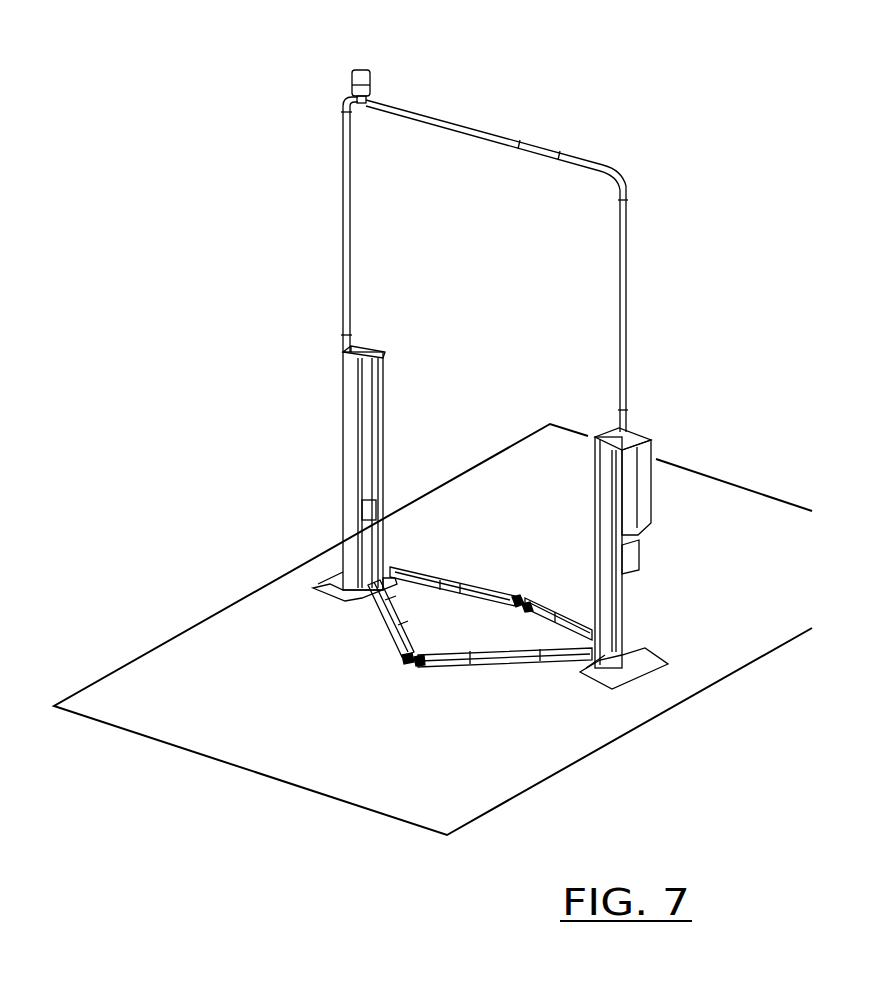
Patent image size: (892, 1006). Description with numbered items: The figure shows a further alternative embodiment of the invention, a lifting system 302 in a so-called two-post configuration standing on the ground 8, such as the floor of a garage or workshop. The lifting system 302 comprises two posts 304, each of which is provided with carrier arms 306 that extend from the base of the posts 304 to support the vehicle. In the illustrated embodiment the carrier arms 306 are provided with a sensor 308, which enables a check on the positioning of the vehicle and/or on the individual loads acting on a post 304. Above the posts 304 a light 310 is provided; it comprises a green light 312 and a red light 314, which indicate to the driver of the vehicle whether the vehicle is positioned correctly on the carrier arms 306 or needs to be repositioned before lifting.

The ground 8 is at (475, 808).
The lifting system 302 is at (225, 373).
The post 304 is at (325, 484).
The carrier arm 306 is at (476, 590).
The sensor 308 is at (526, 606).
The light 310 is at (394, 228).
The green light 312 is at (372, 90).
The red light 314 is at (368, 78).